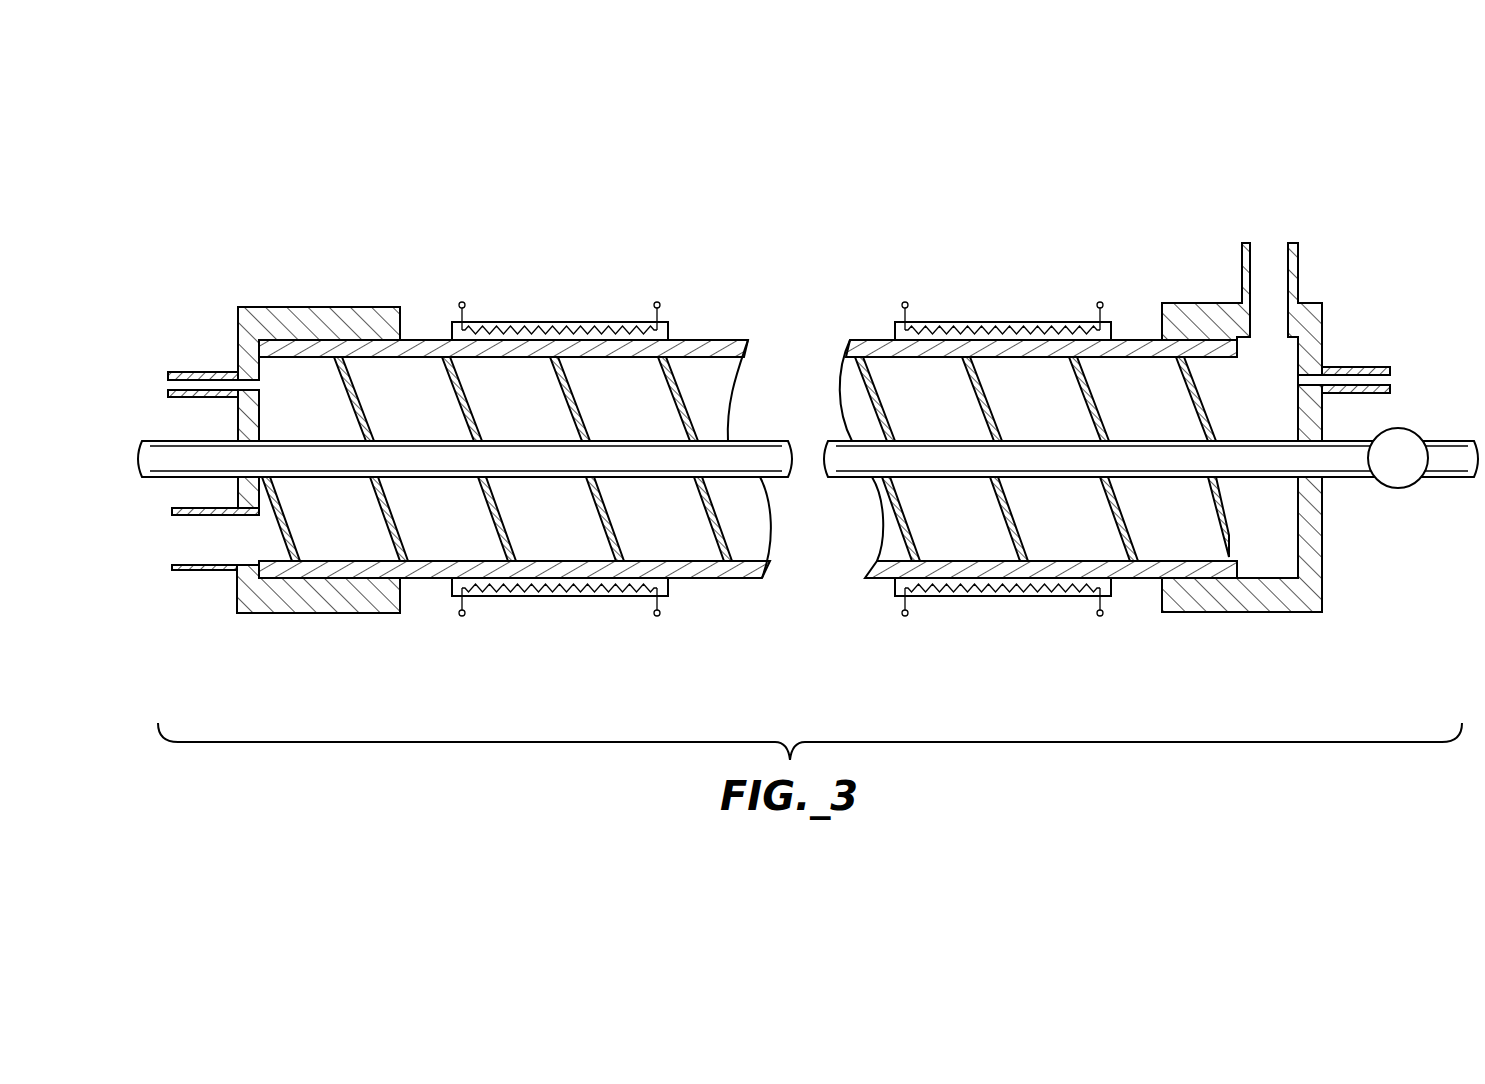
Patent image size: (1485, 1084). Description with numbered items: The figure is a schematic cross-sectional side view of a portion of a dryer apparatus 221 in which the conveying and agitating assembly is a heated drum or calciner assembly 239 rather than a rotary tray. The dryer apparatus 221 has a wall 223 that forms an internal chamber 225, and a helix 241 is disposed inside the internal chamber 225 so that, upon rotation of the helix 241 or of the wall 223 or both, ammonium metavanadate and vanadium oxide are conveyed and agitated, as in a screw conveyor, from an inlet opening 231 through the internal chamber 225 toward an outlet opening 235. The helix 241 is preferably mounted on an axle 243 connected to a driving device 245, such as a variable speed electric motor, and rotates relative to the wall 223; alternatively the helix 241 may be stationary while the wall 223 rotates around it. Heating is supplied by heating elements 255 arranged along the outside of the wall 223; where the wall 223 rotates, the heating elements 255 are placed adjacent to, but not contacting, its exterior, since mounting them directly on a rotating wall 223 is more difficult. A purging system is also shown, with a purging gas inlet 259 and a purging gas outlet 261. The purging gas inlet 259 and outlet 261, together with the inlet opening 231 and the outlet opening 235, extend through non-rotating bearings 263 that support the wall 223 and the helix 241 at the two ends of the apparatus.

The dryer apparatus 221 is at (947, 253).
The wall 223 is at (713, 578).
The internal chamber 225 is at (727, 430).
The inlet opening 231 is at (1270, 252).
The outlet opening 235 is at (230, 553).
The calciner assembly 239 is at (722, 338).
The helix 241 is at (683, 420).
The axle 243 is at (223, 450).
The driving device 245 is at (1398, 487).
The heating elements 255 is at (633, 320).
The purging gas inlet 259 is at (1350, 365).
The purging gas outlet 261 is at (222, 368).
The non-rotating bearings 263 is at (337, 305).